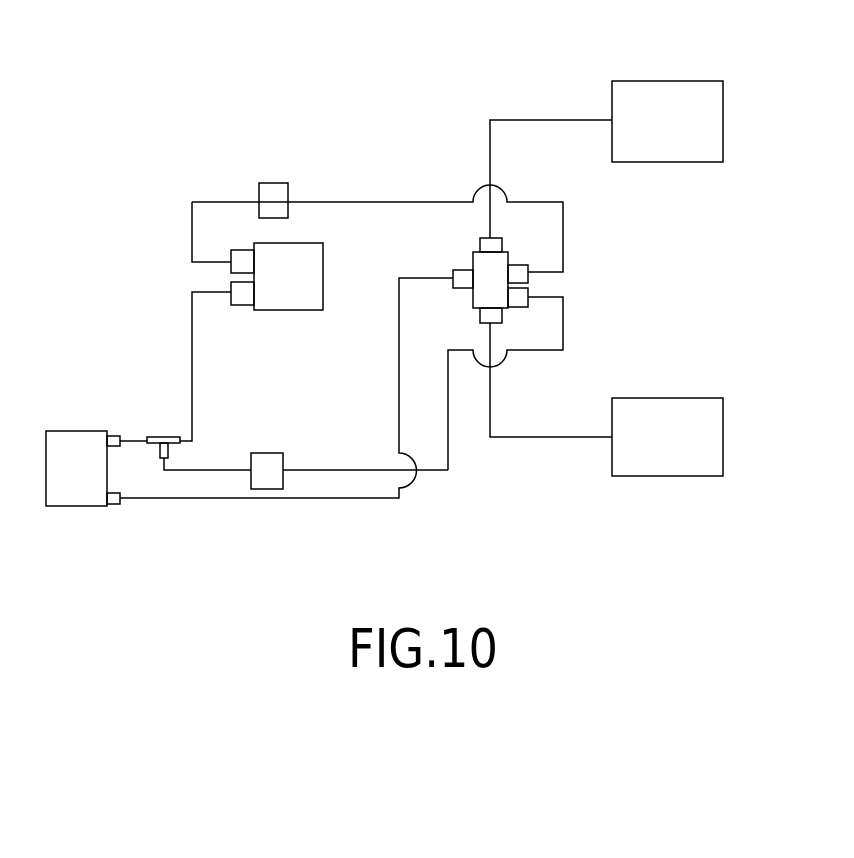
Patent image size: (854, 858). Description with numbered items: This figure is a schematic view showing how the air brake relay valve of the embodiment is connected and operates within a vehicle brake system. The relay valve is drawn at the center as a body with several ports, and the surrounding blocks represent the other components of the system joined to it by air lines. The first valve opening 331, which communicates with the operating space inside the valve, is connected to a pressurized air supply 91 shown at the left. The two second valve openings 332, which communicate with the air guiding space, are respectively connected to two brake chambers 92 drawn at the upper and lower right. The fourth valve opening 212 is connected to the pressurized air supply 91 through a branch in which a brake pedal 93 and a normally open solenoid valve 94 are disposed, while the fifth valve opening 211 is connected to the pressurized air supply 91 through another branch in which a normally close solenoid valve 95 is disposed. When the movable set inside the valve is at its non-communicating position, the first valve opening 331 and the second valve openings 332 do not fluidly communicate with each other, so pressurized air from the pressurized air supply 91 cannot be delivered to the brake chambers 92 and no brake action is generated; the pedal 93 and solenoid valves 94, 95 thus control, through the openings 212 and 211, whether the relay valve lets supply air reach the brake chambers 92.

The pressurized air supply 91 is at (75, 506).
The brake chambers 92 is at (667, 81).
The brake pedal 93 is at (307, 311).
The normally open solenoid valve 94 is at (277, 183).
The normally close solenoid valve 95 is at (268, 453).
The first valve opening 331 is at (468, 268).
The second valve openings 332 is at (531, 232).
The fifth valve opening 211 is at (522, 296).
The fourth valve opening 212 is at (522, 268).